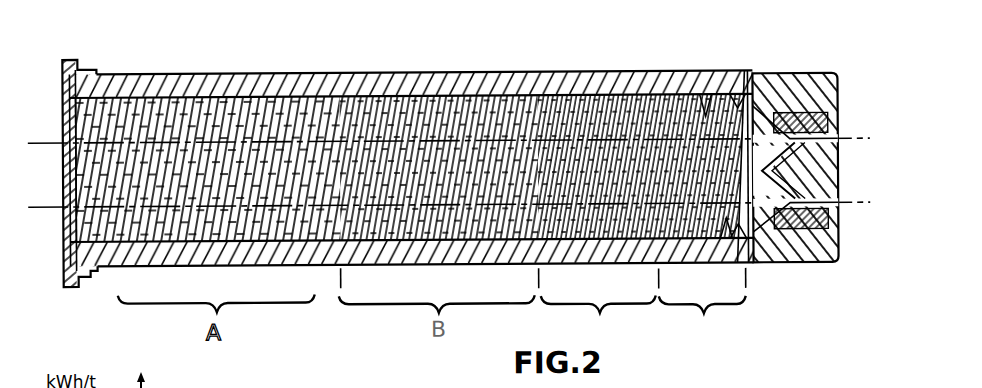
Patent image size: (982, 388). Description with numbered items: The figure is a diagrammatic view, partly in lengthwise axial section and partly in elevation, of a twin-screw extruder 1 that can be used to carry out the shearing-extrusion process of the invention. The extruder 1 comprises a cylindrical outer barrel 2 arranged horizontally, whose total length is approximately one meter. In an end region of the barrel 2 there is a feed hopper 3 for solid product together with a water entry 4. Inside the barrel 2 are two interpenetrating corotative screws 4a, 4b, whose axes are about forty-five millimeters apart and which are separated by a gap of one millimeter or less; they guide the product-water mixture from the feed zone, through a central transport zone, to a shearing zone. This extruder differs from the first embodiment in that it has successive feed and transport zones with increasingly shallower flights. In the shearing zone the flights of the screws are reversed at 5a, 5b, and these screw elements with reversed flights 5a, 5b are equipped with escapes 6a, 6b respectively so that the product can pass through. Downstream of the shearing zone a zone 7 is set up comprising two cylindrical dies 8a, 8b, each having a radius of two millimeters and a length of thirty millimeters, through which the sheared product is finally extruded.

The extruder 1 is at (320, 73).
The cylindrical outer barrel 2 is at (216, 91).
The feed hopper 3 is at (103, 70).
The water entry 4 is at (170, 271).
The corotative screw 4a is at (456, 137).
The corotative screw 4b is at (458, 212).
The screw element with reversed flights 5a is at (740, 103).
The screw element with reversed flights 5b is at (762, 267).
The escape 6a is at (700, 112).
The escape 6b is at (735, 229).
The die zone 7 is at (822, 268).
The cylindrical die 8a is at (837, 142).
The cylindrical die 8b is at (840, 208).